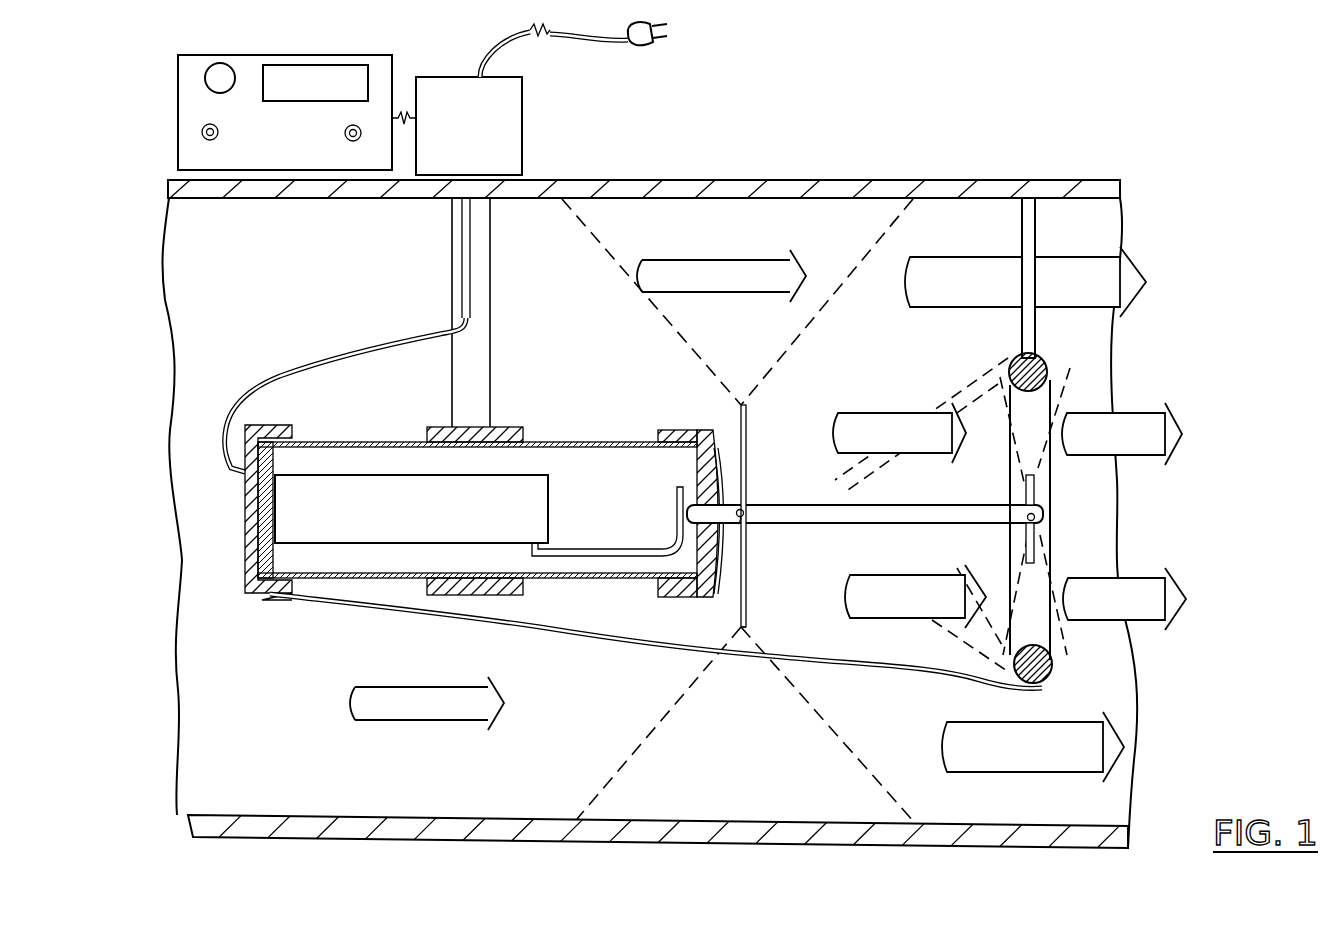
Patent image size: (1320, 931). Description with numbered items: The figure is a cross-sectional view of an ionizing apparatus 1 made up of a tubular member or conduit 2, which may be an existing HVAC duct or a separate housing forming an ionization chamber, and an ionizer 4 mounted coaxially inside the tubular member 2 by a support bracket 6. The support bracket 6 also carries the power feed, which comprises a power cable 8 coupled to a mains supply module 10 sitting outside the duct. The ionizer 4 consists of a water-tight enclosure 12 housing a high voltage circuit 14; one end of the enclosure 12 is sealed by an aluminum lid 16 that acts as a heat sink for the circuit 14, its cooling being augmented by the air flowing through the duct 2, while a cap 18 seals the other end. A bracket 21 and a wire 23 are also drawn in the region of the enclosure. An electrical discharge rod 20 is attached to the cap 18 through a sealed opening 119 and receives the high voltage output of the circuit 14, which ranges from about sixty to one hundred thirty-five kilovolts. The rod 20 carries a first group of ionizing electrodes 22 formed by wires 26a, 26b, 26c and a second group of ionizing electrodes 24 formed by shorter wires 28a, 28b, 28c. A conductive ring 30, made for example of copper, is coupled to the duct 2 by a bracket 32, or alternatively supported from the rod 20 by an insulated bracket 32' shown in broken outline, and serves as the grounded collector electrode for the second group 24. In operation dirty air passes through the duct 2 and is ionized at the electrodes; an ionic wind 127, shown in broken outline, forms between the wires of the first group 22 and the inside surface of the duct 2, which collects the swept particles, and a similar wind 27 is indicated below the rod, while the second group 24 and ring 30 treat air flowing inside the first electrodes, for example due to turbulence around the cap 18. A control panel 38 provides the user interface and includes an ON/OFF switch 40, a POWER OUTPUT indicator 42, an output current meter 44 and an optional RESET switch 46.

The ionizing apparatus 1 is at (852, 150).
The tubular member or conduit 2 is at (1020, 181).
The ionizer 4 is at (627, 435).
The support bracket 6 is at (490, 368).
The power cable 8 is at (292, 367).
The mains supply module 10 is at (522, 118).
The water-tight enclosure 12 is at (556, 442).
The high voltage circuit 14 is at (549, 504).
The aluminum lid 16 is at (248, 580).
The cap 18 is at (680, 430).
The electrical discharge rod 20 is at (905, 505).
The sensor bracket 21 is at (605, 550).
The first group of ionizing electrodes 22 is at (758, 496).
The wire 23 is at (336, 612).
The second group of ionizing electrodes 24 is at (1046, 498).
The ionizing electrode wire 26a is at (748, 422).
The ionizing electrode wire 26b is at (743, 632).
The ionizing electrode wire 26c is at (747, 520).
The lower flow boundary lines 27 is at (830, 725).
The ionizing electrode wire 28a is at (1027, 488).
The ionizing electrode wire 28b is at (1036, 540).
The ionizing electrode wire 28c is at (1028, 522).
The ring 30 is at (1046, 362).
The bracket 32 is at (996, 278).
The insulated bracket 32' is at (921, 414).
The control panel 38 is at (362, 56).
The ON/OFF switch 40 is at (202, 133).
The POWER OUTPUT indicator 42 is at (206, 80).
The output current meter 44 is at (306, 66).
The RESET switch 46 is at (345, 138).
The sealed opening 119 is at (722, 528).
The ionic wind 127 is at (836, 297).